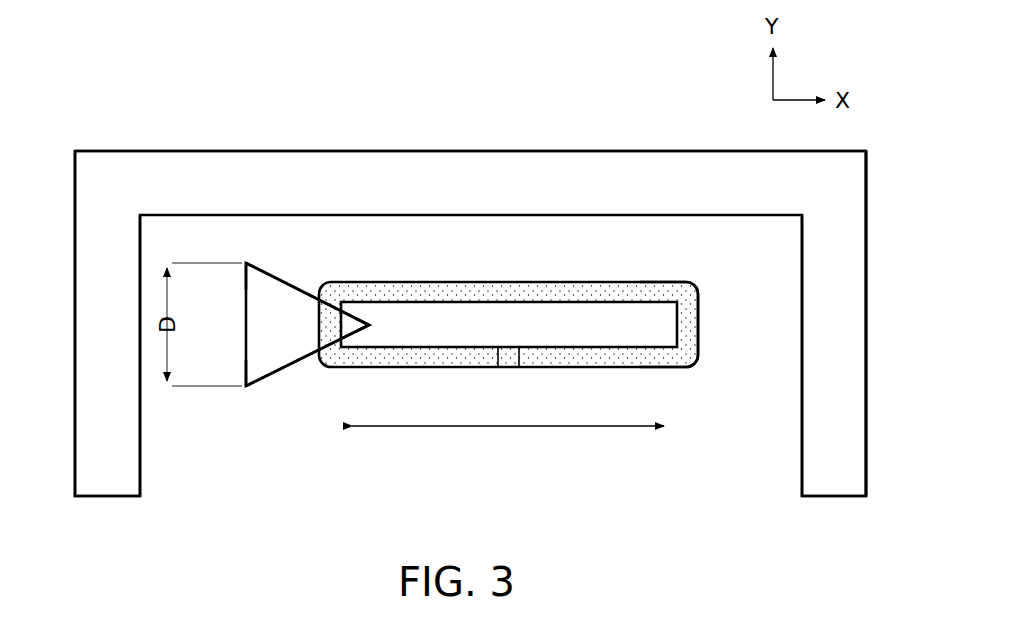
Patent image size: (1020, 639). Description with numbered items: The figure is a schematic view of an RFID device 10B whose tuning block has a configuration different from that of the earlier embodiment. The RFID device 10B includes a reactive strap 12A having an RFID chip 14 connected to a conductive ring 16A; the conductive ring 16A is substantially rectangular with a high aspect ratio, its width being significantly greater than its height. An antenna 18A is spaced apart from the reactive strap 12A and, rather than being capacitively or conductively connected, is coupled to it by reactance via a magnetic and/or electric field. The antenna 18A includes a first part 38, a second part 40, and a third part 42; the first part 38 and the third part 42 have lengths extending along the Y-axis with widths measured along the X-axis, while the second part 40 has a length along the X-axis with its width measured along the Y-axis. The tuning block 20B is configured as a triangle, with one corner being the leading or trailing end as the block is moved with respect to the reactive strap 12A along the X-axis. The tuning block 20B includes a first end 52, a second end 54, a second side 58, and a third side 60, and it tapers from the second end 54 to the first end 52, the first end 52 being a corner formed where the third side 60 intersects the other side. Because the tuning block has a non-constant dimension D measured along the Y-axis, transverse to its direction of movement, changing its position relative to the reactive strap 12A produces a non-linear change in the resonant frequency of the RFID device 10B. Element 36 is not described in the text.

The RFID device 10B is at (138, 108).
The second part 40 is at (224, 151).
The first part 38 is at (86, 436).
The third part 42 is at (856, 436).
The antenna 18A is at (856, 323).
The tuning block 20B is at (260, 379).
The third side 60 is at (246, 282).
The second end 54 is at (246, 366).
The second side 58 is at (290, 284).
The first end 52 is at (370, 325).
The reactive strap 12A is at (696, 388).
The outer wall of cell 36 is at (698, 297).
The conductive ring 16A is at (698, 338).
The RFID chip 14 is at (508, 346).